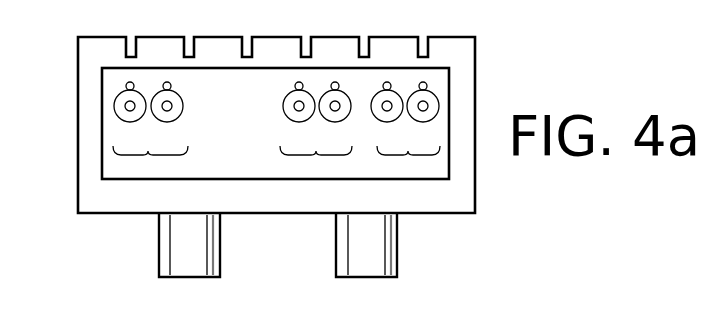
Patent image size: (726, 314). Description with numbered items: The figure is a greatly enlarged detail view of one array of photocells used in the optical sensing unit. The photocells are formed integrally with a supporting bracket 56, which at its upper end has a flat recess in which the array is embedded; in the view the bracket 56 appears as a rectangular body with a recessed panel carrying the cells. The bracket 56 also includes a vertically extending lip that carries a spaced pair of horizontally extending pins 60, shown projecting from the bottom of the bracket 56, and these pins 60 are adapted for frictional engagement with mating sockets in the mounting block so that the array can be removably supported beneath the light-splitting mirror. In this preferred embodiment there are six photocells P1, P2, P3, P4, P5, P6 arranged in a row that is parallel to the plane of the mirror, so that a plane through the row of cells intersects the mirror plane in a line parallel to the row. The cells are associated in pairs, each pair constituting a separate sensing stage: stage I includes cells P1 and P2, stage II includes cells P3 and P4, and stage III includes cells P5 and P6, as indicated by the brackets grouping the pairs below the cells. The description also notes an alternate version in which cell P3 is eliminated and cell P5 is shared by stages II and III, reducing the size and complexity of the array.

The supporting bracket 56 is at (92, 122).
The horizontally extending pins 60 is at (352, 228).
The photocell P1 is at (130, 118).
The photocell P2 is at (167, 118).
The photocell P3 is at (299, 118).
The photocell P4 is at (335, 118).
The photocell P5 is at (387, 118).
The photocell P6 is at (423, 118).
The sensing stage I is at (153, 176).
The sensing stage II is at (323, 176).
The sensing stage III is at (419, 176).